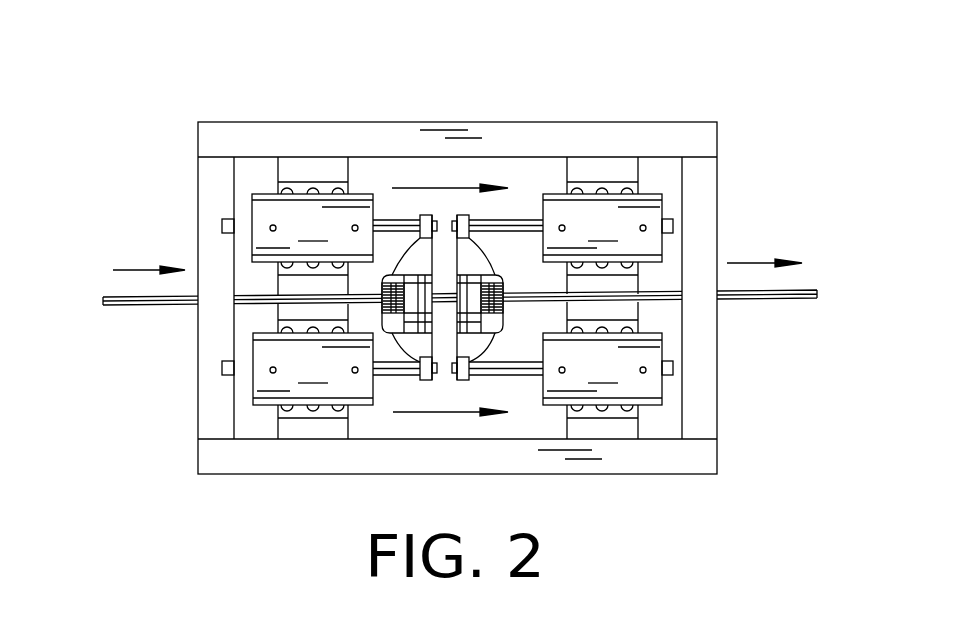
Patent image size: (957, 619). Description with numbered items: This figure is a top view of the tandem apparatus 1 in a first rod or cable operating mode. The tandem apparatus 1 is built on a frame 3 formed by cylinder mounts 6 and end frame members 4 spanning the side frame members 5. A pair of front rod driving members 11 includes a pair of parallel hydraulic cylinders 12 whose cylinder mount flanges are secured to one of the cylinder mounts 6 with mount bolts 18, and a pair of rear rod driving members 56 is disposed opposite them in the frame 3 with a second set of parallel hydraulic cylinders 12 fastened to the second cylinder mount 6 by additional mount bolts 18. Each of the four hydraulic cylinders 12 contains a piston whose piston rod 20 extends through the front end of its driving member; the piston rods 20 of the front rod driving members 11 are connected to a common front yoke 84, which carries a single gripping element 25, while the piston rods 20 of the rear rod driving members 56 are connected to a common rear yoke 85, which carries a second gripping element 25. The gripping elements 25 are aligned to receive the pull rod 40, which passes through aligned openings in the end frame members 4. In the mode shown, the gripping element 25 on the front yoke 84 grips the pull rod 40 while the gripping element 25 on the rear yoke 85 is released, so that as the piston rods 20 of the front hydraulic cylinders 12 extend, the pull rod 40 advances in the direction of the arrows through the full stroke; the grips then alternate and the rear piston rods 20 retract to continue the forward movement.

The tandem apparatus 1 is at (790, 145).
The frame 3 is at (695, 110).
The end frame members 4 is at (210, 423).
The side frame members 5 is at (230, 122).
The cylinder mounts 6 is at (314, 168).
The front rod driving members 11 is at (288, 182).
The hydraulic cylinders 12 is at (457, 299).
The mount bolts 18 is at (278, 276).
The piston rods 20 is at (405, 222).
The gripping elements 25 is at (403, 337).
The pull rod 40 is at (108, 305).
The rear rod driving members 56 is at (565, 210).
The front yoke 84 is at (412, 262).
The rear yoke 85 is at (477, 262).